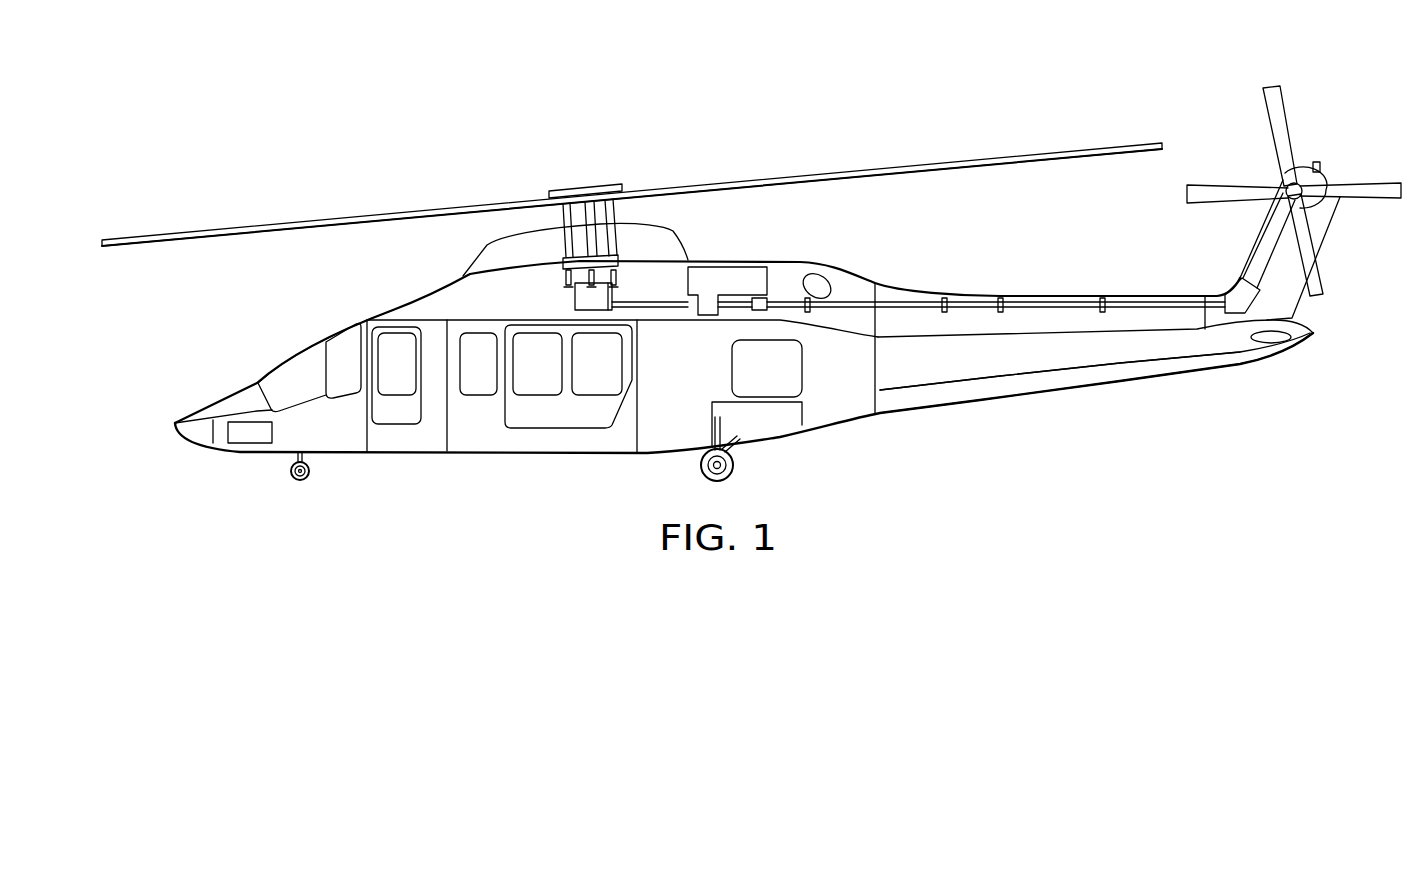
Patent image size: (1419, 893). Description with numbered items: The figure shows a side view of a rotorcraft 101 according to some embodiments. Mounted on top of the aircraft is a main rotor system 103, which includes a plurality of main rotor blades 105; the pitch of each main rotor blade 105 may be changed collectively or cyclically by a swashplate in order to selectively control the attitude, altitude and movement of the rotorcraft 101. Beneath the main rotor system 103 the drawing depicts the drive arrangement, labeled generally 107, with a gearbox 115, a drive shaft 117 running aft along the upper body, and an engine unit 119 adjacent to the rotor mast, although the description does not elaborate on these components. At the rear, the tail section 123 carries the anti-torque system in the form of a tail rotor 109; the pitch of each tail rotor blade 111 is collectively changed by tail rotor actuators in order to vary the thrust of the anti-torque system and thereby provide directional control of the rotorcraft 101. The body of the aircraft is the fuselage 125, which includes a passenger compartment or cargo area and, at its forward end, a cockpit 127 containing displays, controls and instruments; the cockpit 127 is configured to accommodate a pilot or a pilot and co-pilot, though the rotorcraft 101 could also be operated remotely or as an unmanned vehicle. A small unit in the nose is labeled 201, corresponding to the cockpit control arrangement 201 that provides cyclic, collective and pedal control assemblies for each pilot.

The rotorcraft 101 is at (754, 288).
The main rotor system 103 is at (632, 193).
The main rotor blade 105 is at (984, 158).
The drive system 107 is at (847, 256).
The tail rotor 109 is at (1297, 193).
The tail rotor blade 111 is at (1373, 179).
The main gearbox 115 is at (733, 276).
The drive shaft 117 is at (668, 311).
The engine 119 is at (575, 303).
The tail section 123 is at (1124, 378).
The fuselage 125 is at (528, 454).
The cockpit 127 is at (286, 355).
The cockpit control arrangement 201 is at (252, 436).